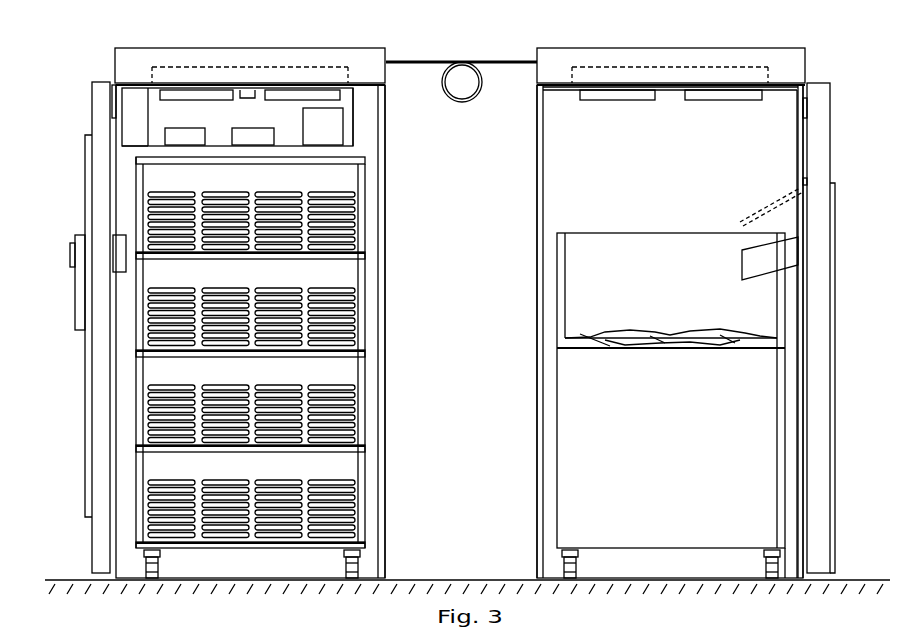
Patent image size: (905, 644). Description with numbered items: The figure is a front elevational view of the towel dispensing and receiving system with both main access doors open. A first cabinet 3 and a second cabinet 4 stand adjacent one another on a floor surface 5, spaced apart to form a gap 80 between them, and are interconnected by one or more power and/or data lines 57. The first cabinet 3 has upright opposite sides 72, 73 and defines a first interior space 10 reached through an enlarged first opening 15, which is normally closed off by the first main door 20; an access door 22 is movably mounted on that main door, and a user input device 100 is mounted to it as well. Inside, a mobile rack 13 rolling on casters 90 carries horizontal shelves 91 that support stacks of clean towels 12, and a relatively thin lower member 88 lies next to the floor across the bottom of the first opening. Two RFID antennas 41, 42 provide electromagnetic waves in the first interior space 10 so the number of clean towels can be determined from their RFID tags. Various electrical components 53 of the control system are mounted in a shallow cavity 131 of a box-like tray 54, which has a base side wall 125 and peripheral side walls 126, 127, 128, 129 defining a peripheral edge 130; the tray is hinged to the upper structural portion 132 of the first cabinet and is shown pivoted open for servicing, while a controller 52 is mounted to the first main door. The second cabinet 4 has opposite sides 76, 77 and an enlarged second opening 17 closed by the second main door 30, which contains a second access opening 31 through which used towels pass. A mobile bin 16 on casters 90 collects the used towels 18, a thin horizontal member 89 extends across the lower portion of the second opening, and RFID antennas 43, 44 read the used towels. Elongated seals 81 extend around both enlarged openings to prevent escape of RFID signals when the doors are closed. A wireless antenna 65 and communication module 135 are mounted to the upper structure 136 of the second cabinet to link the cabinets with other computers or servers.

The first cabinet 3 is at (388, 352).
The second cabinet 4 is at (537, 308).
The floor surface 5 is at (857, 578).
The first interior space 10 is at (372, 398).
The clean towels 12 is at (340, 192).
The mobile rack 13 is at (227, 548).
The enlarged first opening 15 is at (375, 288).
The mobile bin 16 is at (687, 448).
The enlarged second opening 17 is at (553, 196).
The used towels 18 is at (697, 328).
The first main door 20 is at (92, 535).
The access door 22 is at (84, 402).
The second main door 30 is at (832, 497).
The second access opening 31 is at (798, 212).
The RFID antenna 41 is at (200, 100).
The RFID antenna 42 is at (300, 100).
The RFID antenna 43 is at (607, 100).
The RFID antenna 44 is at (730, 100).
The controller 52 is at (118, 233).
The components 53 is at (333, 115).
The tray 54 is at (355, 117).
The power and/or data lines 57 is at (508, 60).
The wireless antenna 65 is at (703, 67).
The side 72 is at (115, 82).
The side 73 is at (386, 485).
The side 76 is at (537, 462).
The side 77 is at (810, 83).
The gap 80 is at (485, 221).
The elongated seals 81 is at (385, 192).
The lower member 88 is at (225, 579).
The horizontal member 89 is at (664, 579).
The casters 90 is at (162, 580).
The shelves 91 is at (338, 250).
The user input device 100 is at (78, 316).
The base side wall 125 is at (160, 116).
The peripheral side wall 126 is at (357, 128).
The peripheral side wall 127 is at (143, 150).
The peripheral side wall 128 is at (147, 125).
The peripheral side wall 129 is at (253, 95).
The peripheral edge 130 is at (150, 104).
The cavity 131 is at (180, 110).
The upper structural portion 132 is at (315, 80).
The communication module 135 is at (768, 67).
The upper structure 136 is at (790, 80).